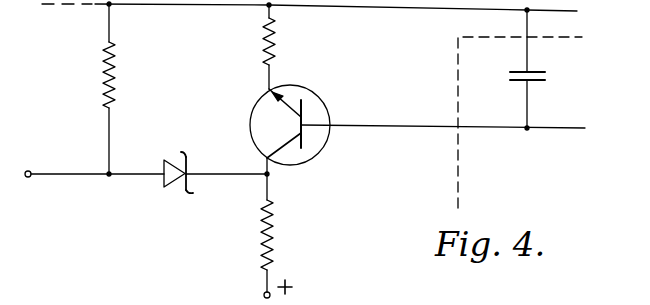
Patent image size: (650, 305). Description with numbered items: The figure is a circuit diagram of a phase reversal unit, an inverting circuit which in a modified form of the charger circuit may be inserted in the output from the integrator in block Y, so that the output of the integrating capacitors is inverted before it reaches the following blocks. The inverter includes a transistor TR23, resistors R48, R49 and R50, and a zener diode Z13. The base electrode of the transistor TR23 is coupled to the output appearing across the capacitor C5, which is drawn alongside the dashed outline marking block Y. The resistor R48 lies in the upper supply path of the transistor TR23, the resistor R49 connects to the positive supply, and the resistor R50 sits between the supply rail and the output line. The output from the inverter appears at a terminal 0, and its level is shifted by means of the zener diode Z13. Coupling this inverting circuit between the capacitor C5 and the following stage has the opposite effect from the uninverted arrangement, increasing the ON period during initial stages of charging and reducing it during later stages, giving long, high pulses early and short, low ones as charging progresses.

The resistor R50 is at (117, 78).
The resistor R48 is at (275, 42).
The resistor R49 is at (273, 237).
The transistor TR23 is at (313, 150).
The zener diode Z13 is at (168, 188).
The capacitor C5 is at (546, 80).
The block Y is at (455, 178).
The terminal 0 is at (136, 175).